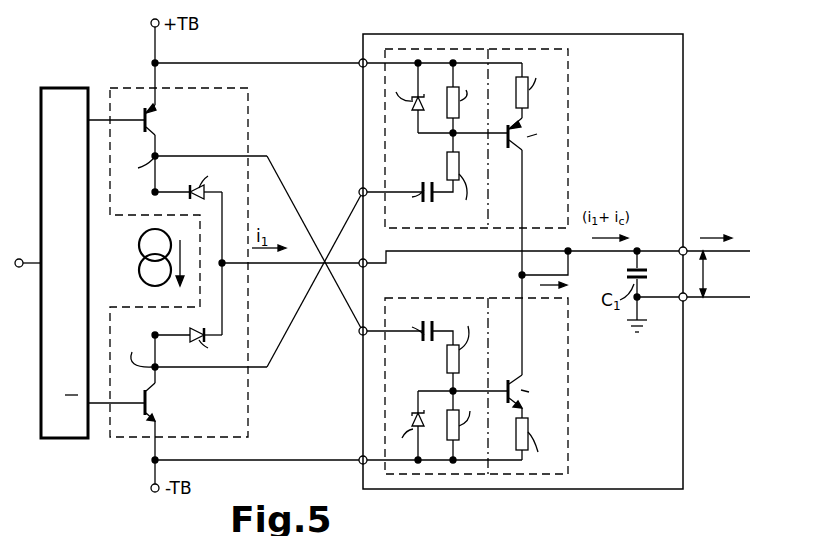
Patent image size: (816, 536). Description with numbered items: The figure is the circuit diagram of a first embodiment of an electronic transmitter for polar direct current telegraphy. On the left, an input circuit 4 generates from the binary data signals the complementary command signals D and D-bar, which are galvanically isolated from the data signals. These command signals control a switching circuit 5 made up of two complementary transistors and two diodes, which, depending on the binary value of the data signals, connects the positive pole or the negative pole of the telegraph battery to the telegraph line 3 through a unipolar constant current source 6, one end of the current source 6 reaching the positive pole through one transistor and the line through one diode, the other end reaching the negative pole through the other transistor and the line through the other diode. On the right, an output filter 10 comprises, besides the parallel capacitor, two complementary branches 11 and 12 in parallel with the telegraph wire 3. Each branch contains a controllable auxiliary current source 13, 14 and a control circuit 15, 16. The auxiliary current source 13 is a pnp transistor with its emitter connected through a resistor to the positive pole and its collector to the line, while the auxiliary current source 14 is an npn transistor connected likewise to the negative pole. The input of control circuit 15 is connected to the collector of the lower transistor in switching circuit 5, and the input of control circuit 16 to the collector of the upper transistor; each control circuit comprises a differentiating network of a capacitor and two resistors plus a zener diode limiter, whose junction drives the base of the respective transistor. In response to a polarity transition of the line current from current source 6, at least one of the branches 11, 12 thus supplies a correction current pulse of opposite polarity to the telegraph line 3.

The telegraph line 3 is at (751, 283).
The input circuit 4 is at (66, 88).
The switching circuit 5 is at (248, 129).
The unipolar constant current source 6 is at (139, 246).
The output filter 10 is at (683, 100).
The complementary branch 11 is at (568, 96).
The complementary branch 12 is at (568, 425).
The controllable auxiliary current source 13 is at (553, 200).
The controllable auxiliary current source 14 is at (553, 343).
The control circuit 15 is at (423, 166).
The control circuit 16 is at (423, 375).